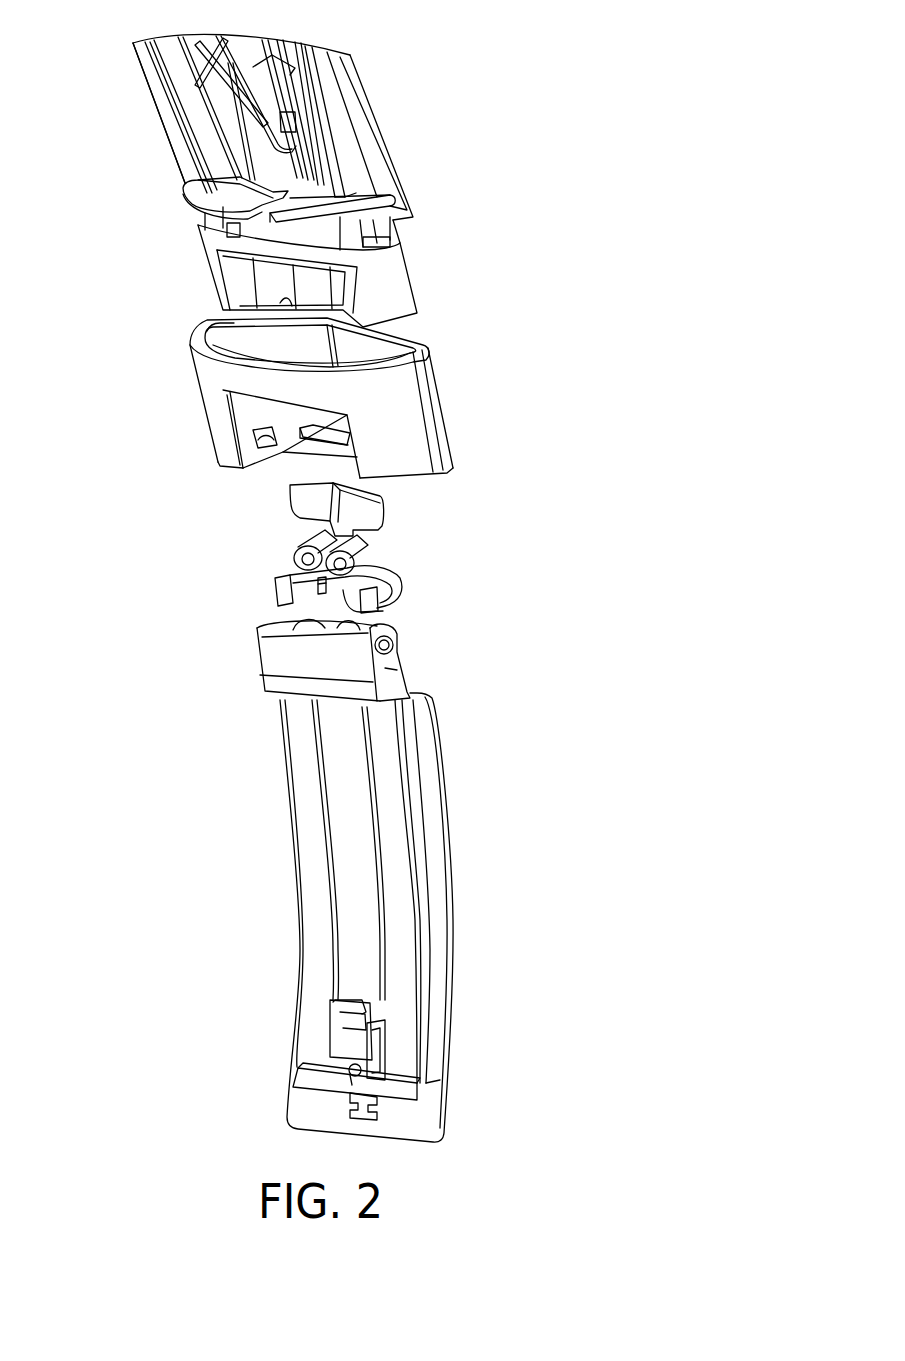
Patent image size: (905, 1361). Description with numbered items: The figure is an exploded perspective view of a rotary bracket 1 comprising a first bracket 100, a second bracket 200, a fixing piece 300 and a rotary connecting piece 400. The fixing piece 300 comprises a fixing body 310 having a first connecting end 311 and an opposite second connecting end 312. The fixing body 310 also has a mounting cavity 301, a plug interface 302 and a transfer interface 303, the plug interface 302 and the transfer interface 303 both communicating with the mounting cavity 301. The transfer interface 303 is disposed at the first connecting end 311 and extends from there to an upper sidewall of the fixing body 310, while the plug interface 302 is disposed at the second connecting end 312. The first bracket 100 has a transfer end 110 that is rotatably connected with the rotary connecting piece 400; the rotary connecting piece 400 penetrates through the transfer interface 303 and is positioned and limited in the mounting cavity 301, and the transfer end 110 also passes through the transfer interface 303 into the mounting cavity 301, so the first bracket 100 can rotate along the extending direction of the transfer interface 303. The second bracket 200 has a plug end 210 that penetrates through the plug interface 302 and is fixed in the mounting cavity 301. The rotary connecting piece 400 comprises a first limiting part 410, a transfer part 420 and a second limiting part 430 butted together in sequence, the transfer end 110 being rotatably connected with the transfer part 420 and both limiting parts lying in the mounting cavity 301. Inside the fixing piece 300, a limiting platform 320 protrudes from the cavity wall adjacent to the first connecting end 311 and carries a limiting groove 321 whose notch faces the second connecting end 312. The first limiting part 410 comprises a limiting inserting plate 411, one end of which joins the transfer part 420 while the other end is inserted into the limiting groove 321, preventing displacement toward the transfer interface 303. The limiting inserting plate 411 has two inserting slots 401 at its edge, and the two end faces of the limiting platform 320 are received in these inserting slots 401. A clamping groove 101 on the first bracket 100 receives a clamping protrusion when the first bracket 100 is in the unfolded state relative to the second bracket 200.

The wearable device strap assembly 1 is at (100, 180).
The first bracket 100 is at (472, 853).
The clamping groove 101 is at (388, 675).
The transfer end 110 is at (272, 650).
The second bracket 200 is at (432, 178).
The plug end 210 is at (400, 300).
The fixing piece 300 is at (460, 407).
The mounting cavity 301 is at (398, 317).
The plug interface 302 is at (200, 329).
The transfer interface 303 is at (235, 421).
The fixing body 310 is at (218, 384).
The first connecting end 311 is at (222, 471).
The second connecting end 312 is at (203, 314).
The limiting platform 320 is at (325, 419).
The limiting groove 321 is at (372, 357).
The rotary connecting piece 400 is at (484, 576).
The inserting slot 401 is at (345, 610).
The first limiting part 410 is at (408, 588).
The limiting inserting plate 411 is at (384, 609).
The transfer part 420 is at (378, 549).
The second limiting part 430 is at (374, 518).